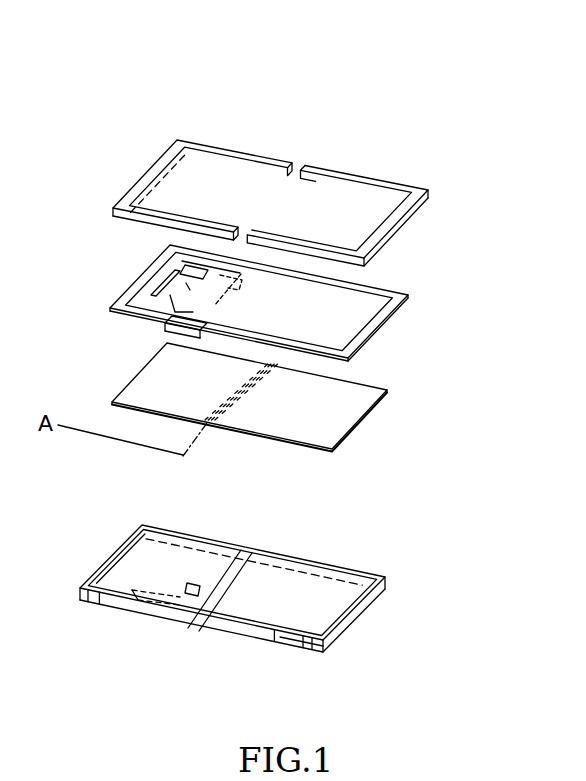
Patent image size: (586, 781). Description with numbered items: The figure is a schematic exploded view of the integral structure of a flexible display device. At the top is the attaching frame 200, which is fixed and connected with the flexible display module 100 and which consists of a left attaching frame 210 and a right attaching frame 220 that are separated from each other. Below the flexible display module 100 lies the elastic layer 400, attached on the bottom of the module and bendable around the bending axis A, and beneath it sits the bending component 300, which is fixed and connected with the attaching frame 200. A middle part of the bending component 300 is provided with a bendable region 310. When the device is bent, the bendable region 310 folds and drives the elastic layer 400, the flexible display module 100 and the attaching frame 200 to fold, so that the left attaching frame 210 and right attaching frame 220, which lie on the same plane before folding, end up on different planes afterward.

The flexible display module 100 is at (378, 333).
The attaching frame 200 is at (460, 89).
The left attaching frame 210 is at (233, 155).
The right attaching frame 220 is at (367, 180).
The bending component 300 is at (303, 611).
The bendable region 310 is at (217, 601).
The elastic layer 400 is at (370, 417).